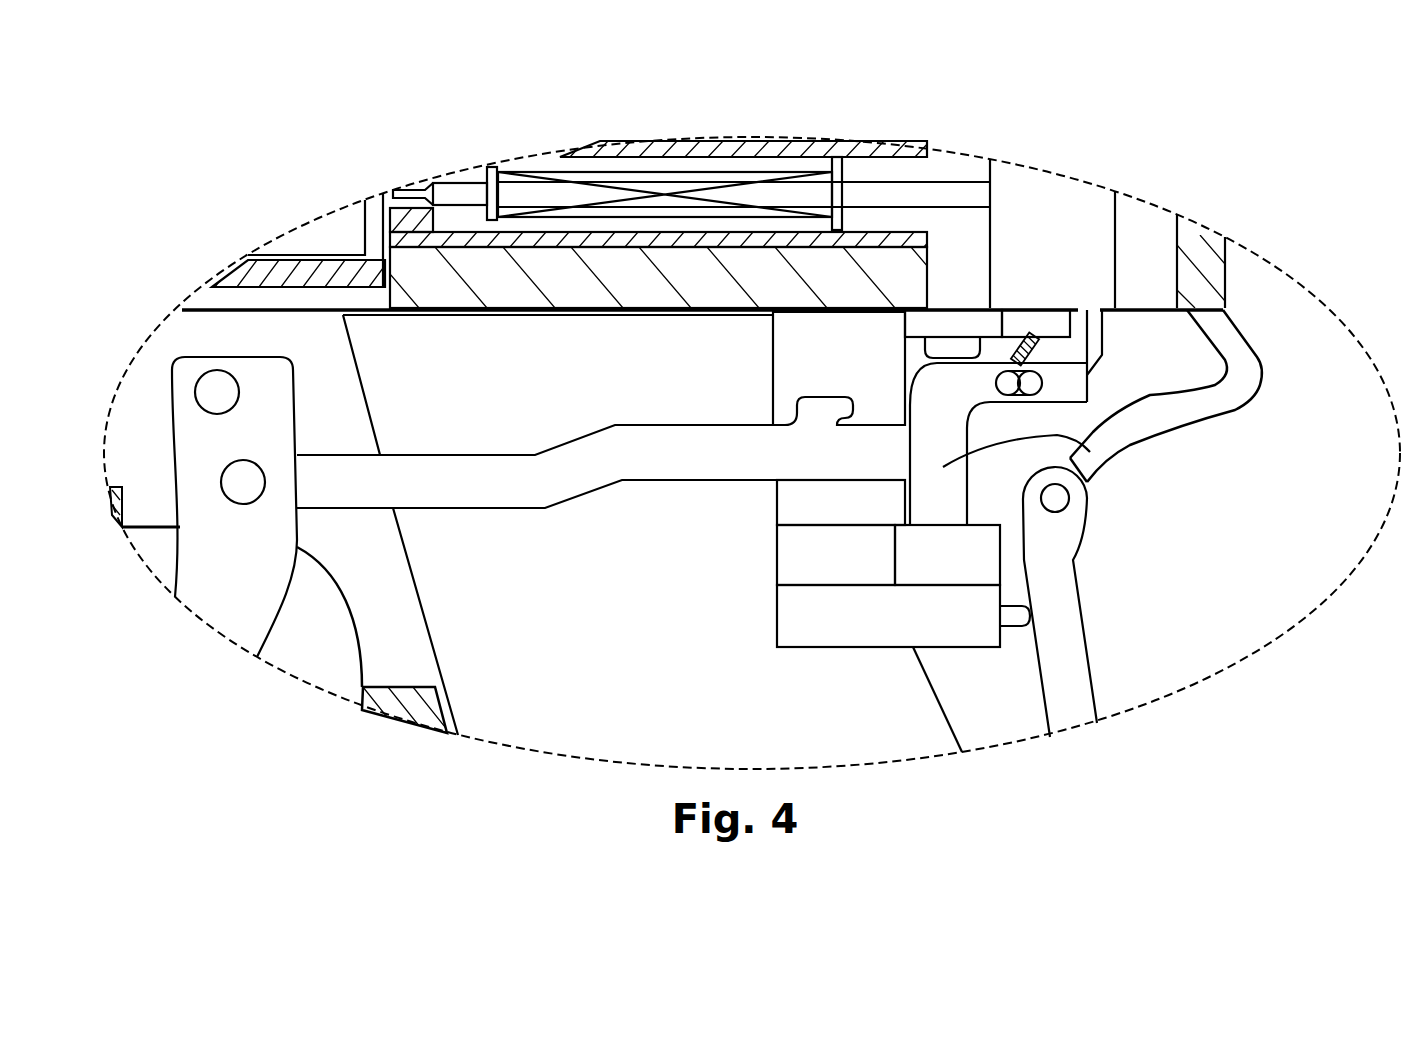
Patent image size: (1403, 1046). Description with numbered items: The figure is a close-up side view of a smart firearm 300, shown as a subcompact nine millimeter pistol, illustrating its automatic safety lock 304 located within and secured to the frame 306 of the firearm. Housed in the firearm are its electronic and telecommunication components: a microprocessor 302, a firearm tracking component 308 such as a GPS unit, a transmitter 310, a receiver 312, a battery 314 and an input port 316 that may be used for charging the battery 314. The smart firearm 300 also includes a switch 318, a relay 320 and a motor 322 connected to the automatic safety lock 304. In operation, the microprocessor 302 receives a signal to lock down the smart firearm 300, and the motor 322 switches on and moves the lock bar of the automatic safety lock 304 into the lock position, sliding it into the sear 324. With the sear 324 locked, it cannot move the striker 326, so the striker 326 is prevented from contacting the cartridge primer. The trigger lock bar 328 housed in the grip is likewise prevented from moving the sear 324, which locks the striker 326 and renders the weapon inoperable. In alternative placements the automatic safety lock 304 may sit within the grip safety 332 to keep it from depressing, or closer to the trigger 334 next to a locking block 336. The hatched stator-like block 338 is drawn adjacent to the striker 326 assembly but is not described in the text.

The smart firearm 300 is at (1158, 120).
The microprocessor 302 is at (806, 367).
The automatic safety lock 304 is at (1040, 349).
The frame 306 is at (415, 663).
The firearm tracking component 308 is at (819, 515).
The transmitter 310 is at (916, 568).
The receiver 312 is at (814, 568).
The battery 314 is at (866, 632).
The input port 316 is at (1022, 618).
The switch 318 is at (935, 327).
The relay 320 is at (948, 350).
The motor 322 is at (1047, 325).
The sear 324 is at (1100, 462).
The striker 326 is at (732, 195).
The trigger lock bar 328 is at (580, 458).
The grip safety 332 is at (1060, 677).
The trigger 334 is at (238, 588).
The locking block 336 is at (143, 437).
The stator block 338 is at (796, 249).